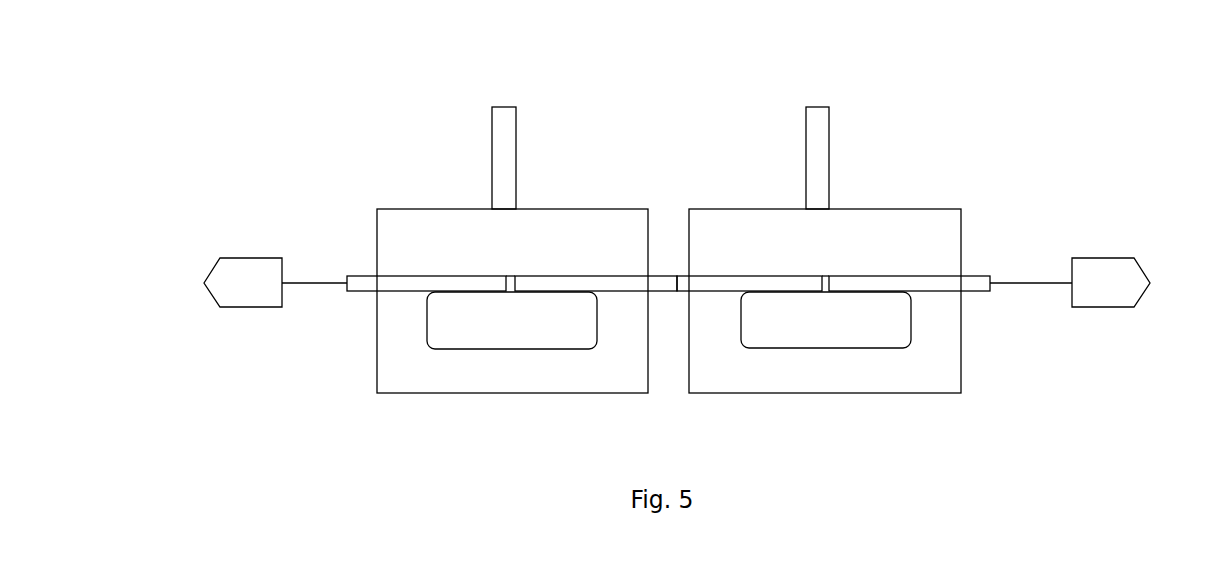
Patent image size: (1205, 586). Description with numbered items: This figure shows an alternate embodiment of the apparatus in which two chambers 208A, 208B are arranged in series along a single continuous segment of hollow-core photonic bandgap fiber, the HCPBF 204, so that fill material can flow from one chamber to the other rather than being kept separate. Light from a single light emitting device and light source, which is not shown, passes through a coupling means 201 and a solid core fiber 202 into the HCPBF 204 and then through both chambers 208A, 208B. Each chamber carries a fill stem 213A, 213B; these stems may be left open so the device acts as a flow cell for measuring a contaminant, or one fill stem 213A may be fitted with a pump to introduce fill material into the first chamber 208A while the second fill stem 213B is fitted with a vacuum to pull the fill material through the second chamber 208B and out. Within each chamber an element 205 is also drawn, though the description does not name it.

The coupling means 201 is at (250, 258).
The solid core fiber 202 is at (308, 280).
The HCPBF 204 is at (348, 293).
The electronics module 205 is at (532, 335).
The chamber 208A is at (597, 208).
The chamber 208B is at (908, 208).
The fill stem 213A is at (505, 107).
The fill stem 213B is at (818, 107).